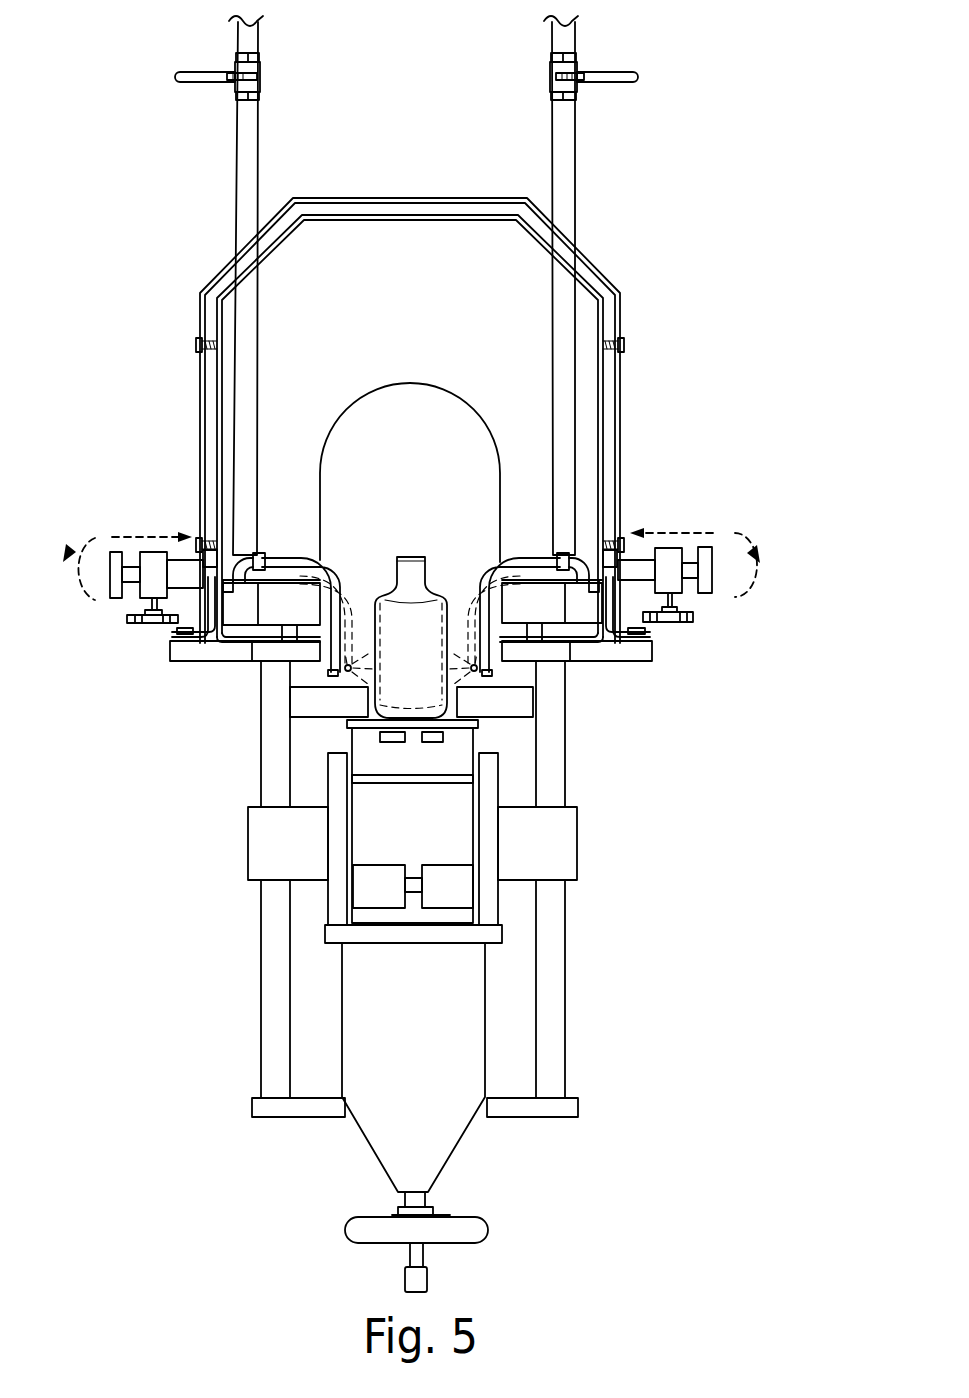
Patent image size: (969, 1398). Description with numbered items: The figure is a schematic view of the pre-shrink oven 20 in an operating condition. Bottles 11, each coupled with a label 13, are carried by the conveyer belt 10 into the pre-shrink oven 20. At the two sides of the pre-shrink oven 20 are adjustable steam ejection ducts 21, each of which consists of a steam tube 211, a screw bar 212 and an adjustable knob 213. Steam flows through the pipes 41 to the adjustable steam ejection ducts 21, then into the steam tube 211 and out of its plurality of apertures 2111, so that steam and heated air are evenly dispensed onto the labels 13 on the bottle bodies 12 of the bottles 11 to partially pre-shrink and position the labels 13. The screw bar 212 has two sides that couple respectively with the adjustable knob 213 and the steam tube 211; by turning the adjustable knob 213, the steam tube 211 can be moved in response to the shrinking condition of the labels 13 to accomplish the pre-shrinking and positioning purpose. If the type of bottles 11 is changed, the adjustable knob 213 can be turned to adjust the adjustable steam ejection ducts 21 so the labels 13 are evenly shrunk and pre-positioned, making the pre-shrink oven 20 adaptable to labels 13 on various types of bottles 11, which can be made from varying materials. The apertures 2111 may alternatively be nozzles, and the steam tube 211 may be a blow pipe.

The conveyer belt 10 is at (347, 735).
The bottle 11 is at (384, 536).
The bottle body 12 is at (432, 599).
The label 13 is at (373, 608).
The pre-shrink oven 20 is at (168, 281).
The adjustable steam ejection duct 21 is at (120, 505).
The pipe 41 is at (570, 152).
The steam tube 211 is at (320, 662).
The screw bar 212 is at (690, 583).
The adjustable knob 213 is at (110, 592).
The aperture 2111 is at (533, 667).